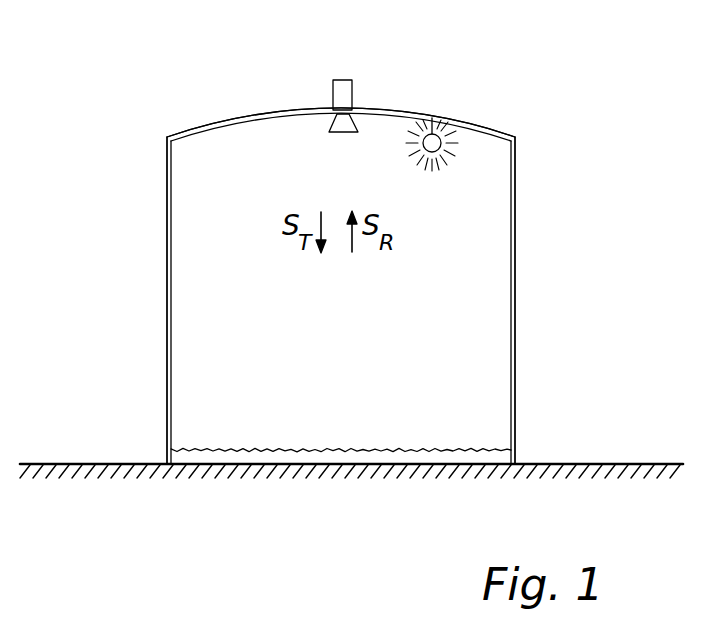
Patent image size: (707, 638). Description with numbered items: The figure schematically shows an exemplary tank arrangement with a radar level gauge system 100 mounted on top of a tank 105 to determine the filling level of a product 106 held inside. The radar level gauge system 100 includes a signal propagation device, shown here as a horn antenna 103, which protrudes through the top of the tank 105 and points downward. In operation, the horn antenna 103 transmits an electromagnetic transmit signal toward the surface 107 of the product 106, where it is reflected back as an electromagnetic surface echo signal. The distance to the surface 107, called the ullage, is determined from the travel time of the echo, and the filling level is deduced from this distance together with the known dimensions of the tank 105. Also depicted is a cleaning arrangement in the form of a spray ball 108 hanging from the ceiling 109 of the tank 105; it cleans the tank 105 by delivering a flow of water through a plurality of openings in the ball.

The radar level gauge system 100 is at (357, 70).
The horn antenna 103 is at (333, 128).
The tank 105 is at (252, 114).
The product 106 is at (298, 464).
The surface 107 is at (206, 449).
The spray ball 108 is at (442, 138).
The ceiling 109 is at (400, 111).